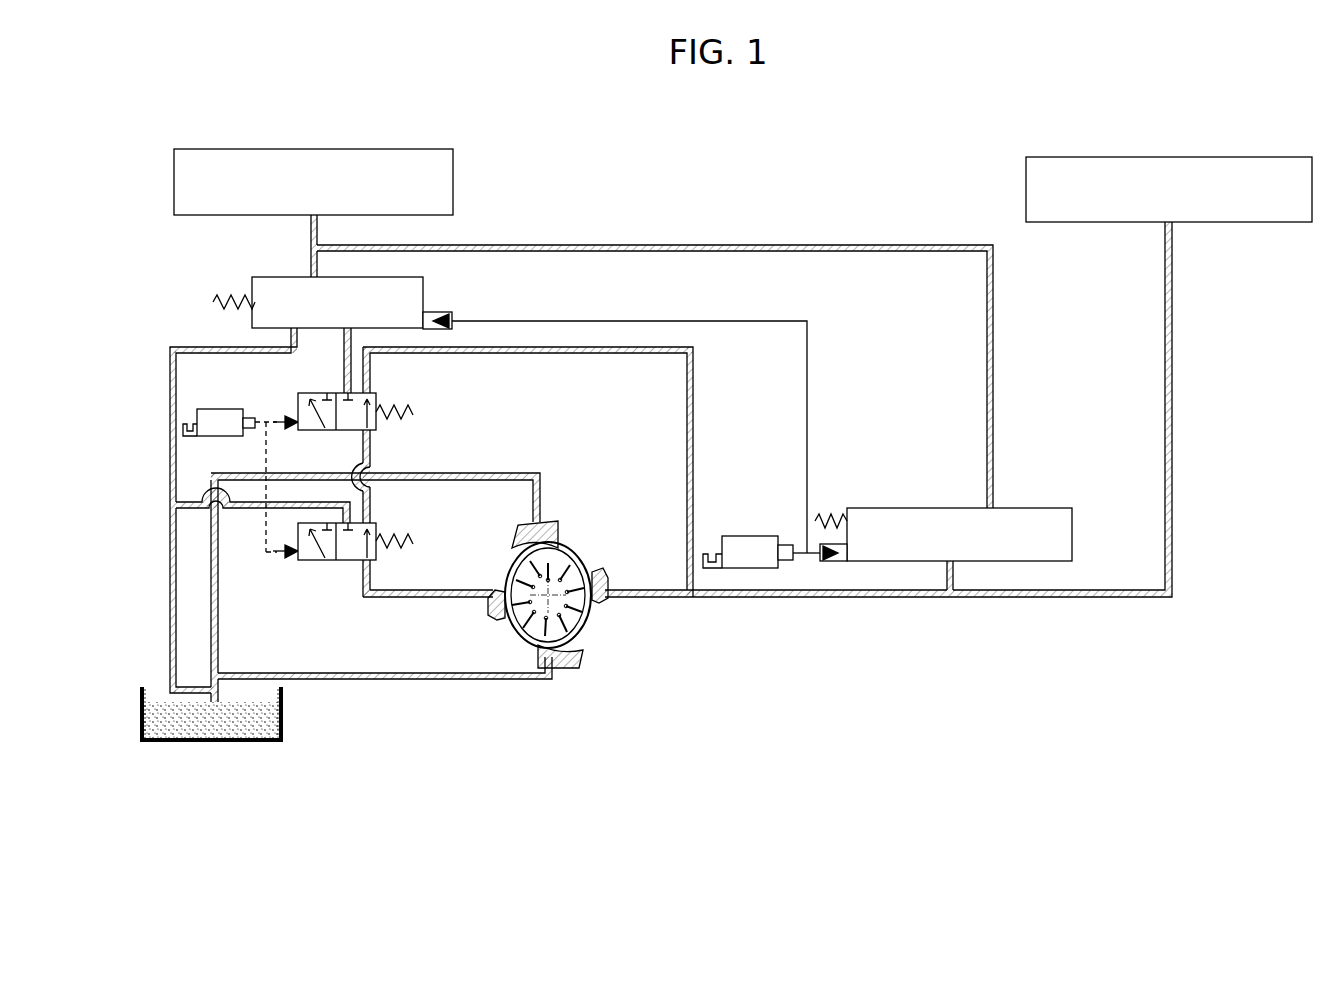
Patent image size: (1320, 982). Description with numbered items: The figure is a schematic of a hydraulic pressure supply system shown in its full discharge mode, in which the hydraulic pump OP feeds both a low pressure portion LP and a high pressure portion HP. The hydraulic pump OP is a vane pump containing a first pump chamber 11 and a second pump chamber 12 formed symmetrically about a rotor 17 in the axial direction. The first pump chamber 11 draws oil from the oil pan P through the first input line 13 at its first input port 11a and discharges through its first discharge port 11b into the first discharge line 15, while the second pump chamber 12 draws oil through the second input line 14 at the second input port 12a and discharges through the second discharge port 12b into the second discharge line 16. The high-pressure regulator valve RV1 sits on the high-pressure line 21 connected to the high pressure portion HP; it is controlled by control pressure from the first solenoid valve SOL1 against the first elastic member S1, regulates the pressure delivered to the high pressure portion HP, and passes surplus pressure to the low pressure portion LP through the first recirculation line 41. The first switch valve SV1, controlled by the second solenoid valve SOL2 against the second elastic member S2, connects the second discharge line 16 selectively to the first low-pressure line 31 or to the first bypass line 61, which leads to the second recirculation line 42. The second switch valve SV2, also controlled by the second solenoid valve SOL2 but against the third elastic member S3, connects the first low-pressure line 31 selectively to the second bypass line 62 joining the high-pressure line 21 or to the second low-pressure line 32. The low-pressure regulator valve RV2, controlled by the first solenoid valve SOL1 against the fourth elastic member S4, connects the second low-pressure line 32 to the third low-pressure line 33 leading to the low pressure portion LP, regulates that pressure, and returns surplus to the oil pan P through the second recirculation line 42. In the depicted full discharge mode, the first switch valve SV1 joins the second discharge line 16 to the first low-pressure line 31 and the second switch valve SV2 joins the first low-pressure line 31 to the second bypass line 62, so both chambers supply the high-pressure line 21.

The first pump chamber 11 is at (572, 553).
The first input port 11a is at (552, 530).
The first discharge port 11b is at (609, 582).
The second pump chamber 12 is at (530, 640).
The second input port 12a is at (573, 652).
The second discharge port 12b is at (494, 617).
The first input line 13 is at (512, 473).
The second input line 14 is at (408, 682).
The first discharge line 15 is at (663, 598).
The second discharge line 16 is at (376, 598).
The rotor 17 is at (537, 583).
The high-pressure line 21 is at (1052, 598).
The first low-pressure line 31 is at (367, 450).
The second low-pressure line 32 is at (344, 372).
The third low-pressure line 33 is at (311, 240).
The first recirculation line 41 is at (832, 245).
The second recirculation line 42 is at (170, 360).
The first bypass line 61 is at (240, 510).
The second bypass line 62 is at (693, 390).
The low pressure portion LP is at (313, 149).
The high pressure portion HP is at (1167, 157).
The high-pressure regulator valve RV1 is at (1043, 508).
The low-pressure regulator valve RV2 is at (423, 296).
The first switch valve SV1 is at (320, 562).
The second switch valve SV2 is at (376, 428).
The first solenoid valve SOL1 is at (750, 536).
The second solenoid valve SOL2 is at (220, 409).
The first elastic member S1 is at (832, 516).
The second elastic member S2 is at (407, 540).
The third elastic member S3 is at (407, 411).
The fourth elastic member S4 is at (213, 302).
The hydraulic pump OP is at (590, 620).
The oil pan P is at (283, 713).